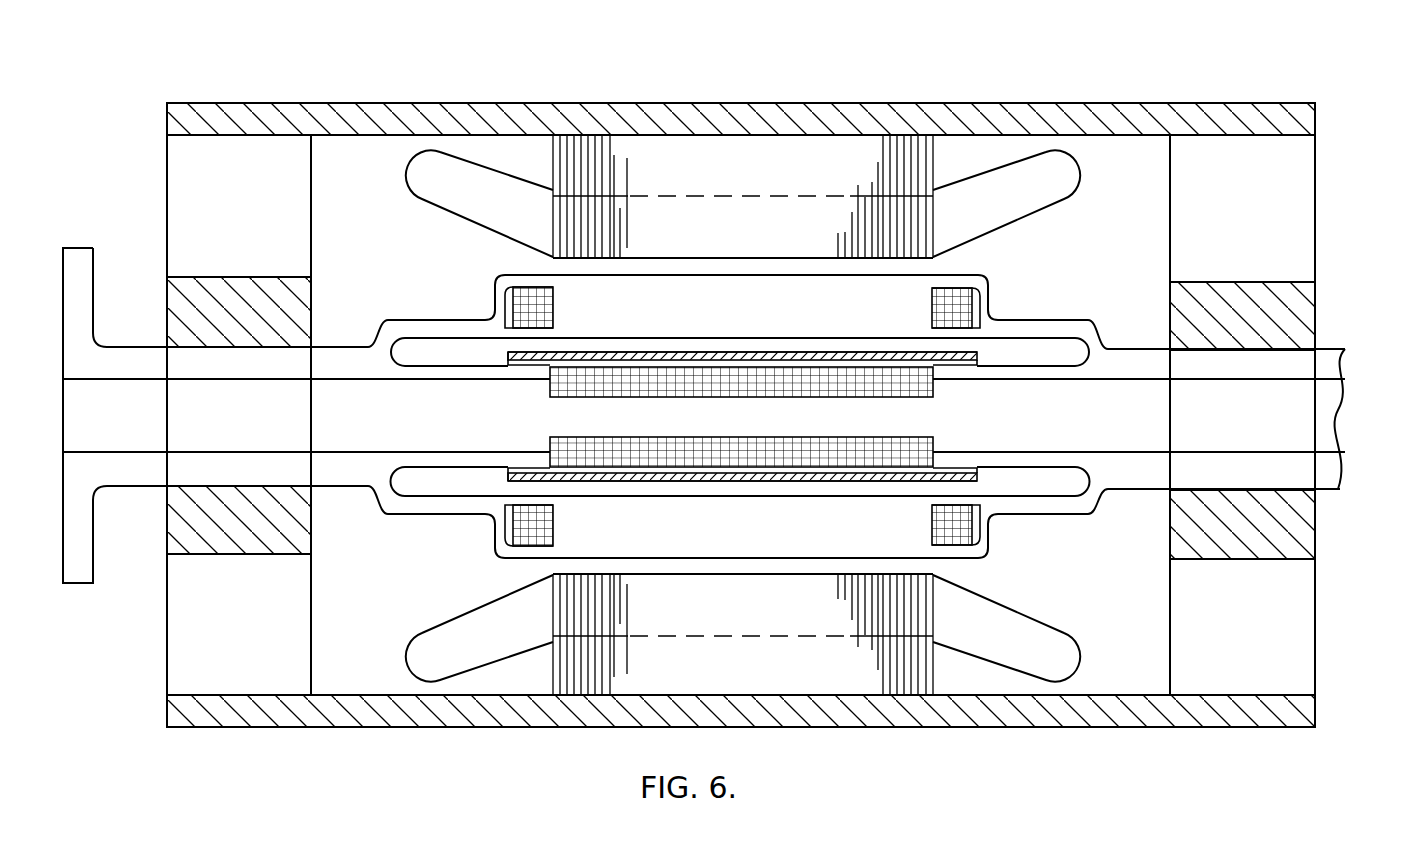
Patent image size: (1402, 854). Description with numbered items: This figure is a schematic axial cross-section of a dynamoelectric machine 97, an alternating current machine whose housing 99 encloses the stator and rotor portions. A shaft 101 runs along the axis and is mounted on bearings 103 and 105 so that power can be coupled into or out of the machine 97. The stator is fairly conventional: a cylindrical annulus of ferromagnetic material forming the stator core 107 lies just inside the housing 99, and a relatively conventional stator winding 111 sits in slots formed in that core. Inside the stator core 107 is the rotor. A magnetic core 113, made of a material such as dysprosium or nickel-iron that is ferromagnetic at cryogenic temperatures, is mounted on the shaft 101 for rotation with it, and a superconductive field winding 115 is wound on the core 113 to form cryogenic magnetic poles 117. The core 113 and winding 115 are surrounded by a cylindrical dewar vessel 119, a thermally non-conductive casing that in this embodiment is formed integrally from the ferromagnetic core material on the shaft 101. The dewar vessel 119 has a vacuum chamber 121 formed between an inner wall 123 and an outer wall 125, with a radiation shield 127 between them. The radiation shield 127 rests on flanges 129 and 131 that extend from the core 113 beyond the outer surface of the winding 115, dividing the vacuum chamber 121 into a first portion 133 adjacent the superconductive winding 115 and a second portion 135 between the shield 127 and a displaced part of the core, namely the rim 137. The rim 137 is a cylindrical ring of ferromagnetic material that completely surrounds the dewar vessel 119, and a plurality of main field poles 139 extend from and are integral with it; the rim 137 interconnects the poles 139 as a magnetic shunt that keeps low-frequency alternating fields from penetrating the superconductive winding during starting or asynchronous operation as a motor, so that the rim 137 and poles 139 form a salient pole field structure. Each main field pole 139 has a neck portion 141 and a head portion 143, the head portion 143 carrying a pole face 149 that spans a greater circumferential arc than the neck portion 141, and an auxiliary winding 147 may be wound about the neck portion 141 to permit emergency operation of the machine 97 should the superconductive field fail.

The dynamoelectric machine 97 is at (957, 81).
The housing 99 is at (690, 112).
The shaft 101 is at (1325, 432).
The bearing 103 is at (1308, 318).
The bearing 105 is at (177, 312).
The stator core 107 is at (838, 150).
The stator winding 111 is at (455, 200).
The magnetic core 113 is at (550, 373).
The superconductive field winding 115 is at (727, 384).
The cryogenic magnetic poles 117 is at (915, 285).
The dewar vessel 119 is at (432, 357).
The vacuum chamber 121 is at (1050, 350).
The inner wall 123 is at (828, 352).
The outer wall 125 is at (607, 338).
The radiation shield 127 is at (705, 350).
The flange 129 is at (960, 358).
The flange 131 is at (522, 474).
The first portion of vacuum chamber 133 is at (778, 470).
The second portion of vacuum chamber 135 is at (763, 490).
The rim 137 is at (975, 336).
The main field poles 139 is at (802, 560).
The neck portion 141 is at (578, 543).
The head portion 143 is at (915, 550).
The auxiliary winding 147 is at (525, 300).
The pole face 149 is at (565, 273).